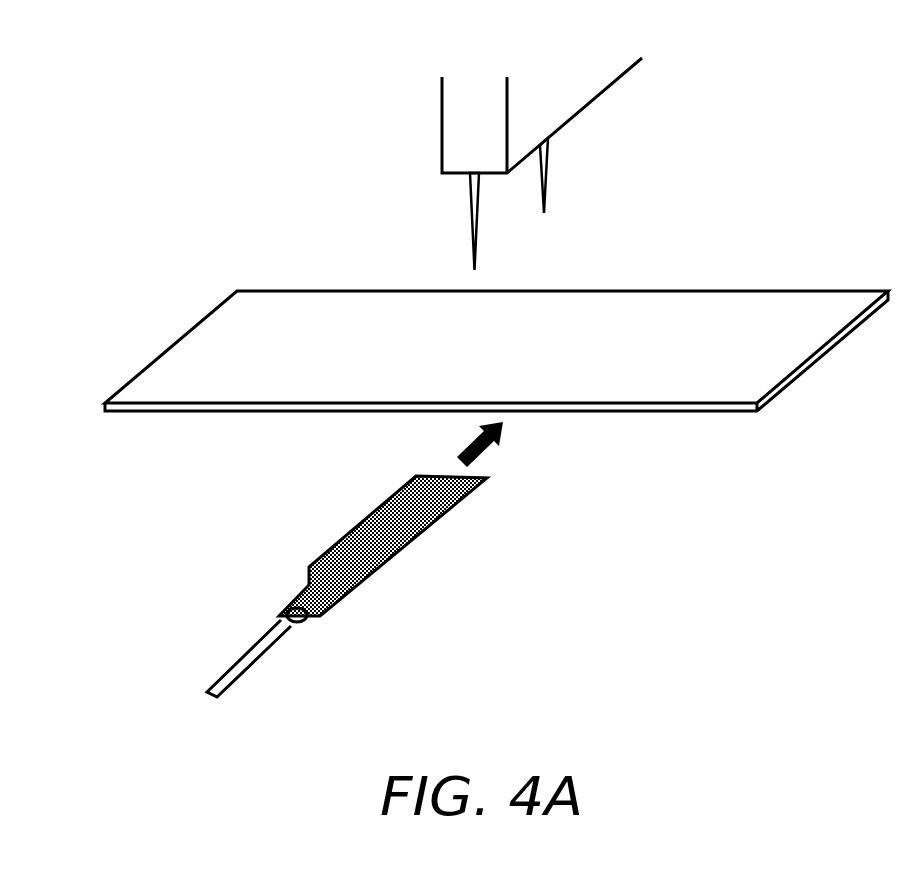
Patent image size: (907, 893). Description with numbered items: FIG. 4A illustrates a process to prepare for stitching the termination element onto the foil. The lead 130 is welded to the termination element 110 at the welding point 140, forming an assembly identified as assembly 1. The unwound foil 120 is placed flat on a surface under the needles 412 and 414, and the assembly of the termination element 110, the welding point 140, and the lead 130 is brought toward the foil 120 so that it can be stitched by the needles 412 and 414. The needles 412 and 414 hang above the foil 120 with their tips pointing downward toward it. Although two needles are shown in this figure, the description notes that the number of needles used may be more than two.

The termination element assembly 1 is at (434, 586).
The termination element 110 is at (437, 512).
The foil 120 is at (735, 393).
The lead 130 is at (232, 679).
The welding point 140 is at (309, 621).
The needle 412 is at (468, 193).
The needle 414 is at (548, 162).